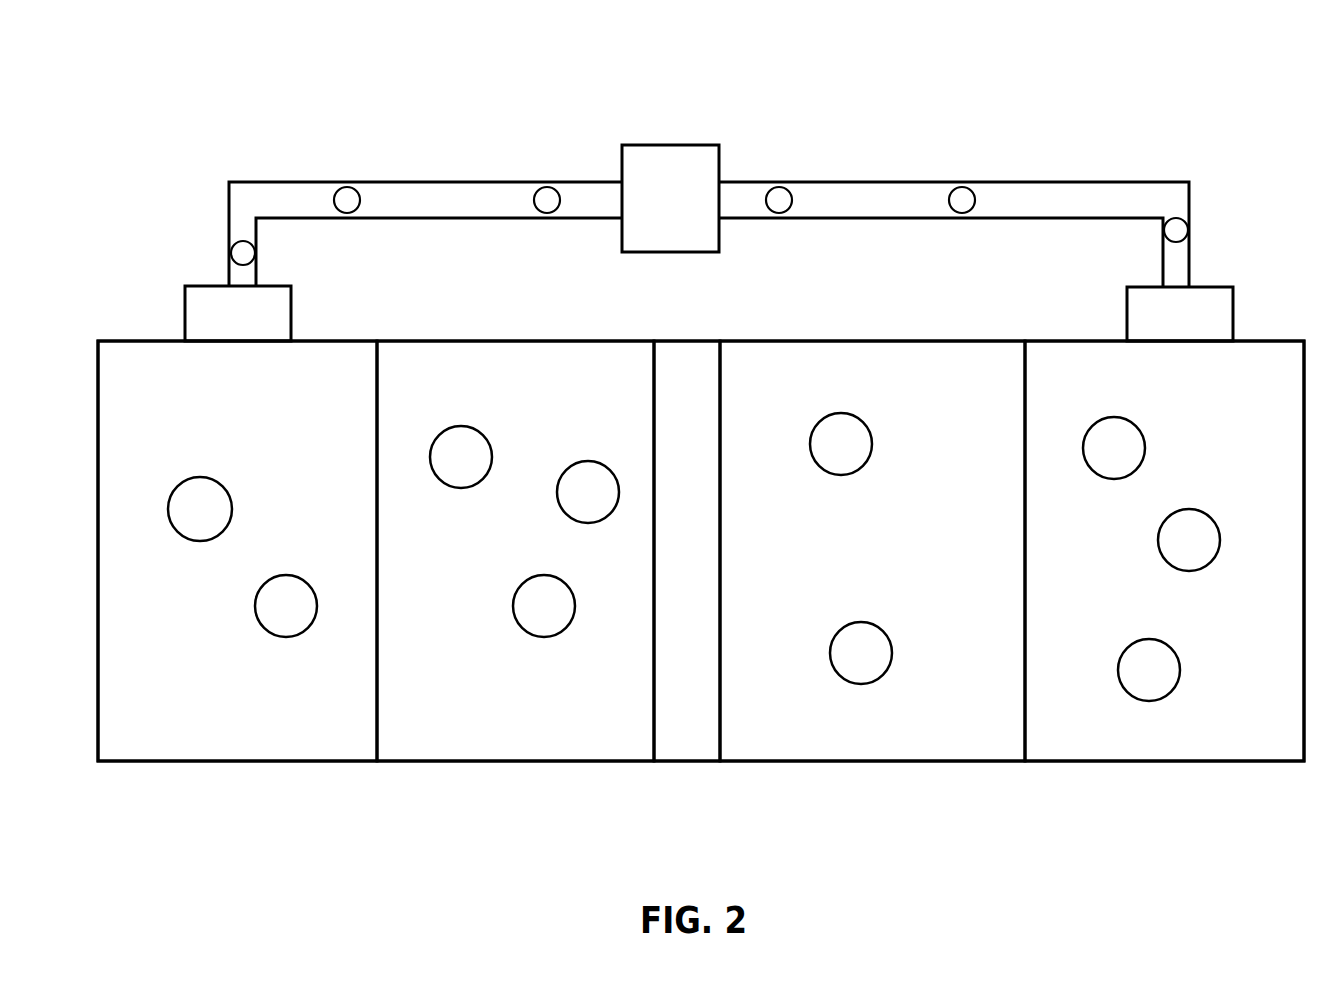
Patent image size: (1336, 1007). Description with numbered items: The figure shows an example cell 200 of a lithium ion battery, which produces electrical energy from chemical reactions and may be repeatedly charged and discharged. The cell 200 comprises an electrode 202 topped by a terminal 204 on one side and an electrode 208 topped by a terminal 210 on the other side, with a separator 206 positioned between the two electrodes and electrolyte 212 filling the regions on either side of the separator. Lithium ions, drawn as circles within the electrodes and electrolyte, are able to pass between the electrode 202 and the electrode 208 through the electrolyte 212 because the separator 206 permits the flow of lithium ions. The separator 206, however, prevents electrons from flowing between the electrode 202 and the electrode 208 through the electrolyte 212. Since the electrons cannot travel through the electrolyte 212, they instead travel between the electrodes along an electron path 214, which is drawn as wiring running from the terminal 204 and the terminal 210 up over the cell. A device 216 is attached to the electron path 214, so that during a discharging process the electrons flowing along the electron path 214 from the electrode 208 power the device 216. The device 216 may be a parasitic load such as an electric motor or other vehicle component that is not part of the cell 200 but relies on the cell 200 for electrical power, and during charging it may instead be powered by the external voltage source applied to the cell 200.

The cell 200 is at (970, 62).
The electrode 202 is at (303, 386).
The terminal 204 is at (256, 332).
The separator 206 is at (702, 518).
The electrode 208 is at (1246, 386).
The terminal 210 is at (1198, 324).
The electrolyte 212 is at (541, 384).
The electron path 214 is at (427, 210).
The device 216 is at (687, 224).